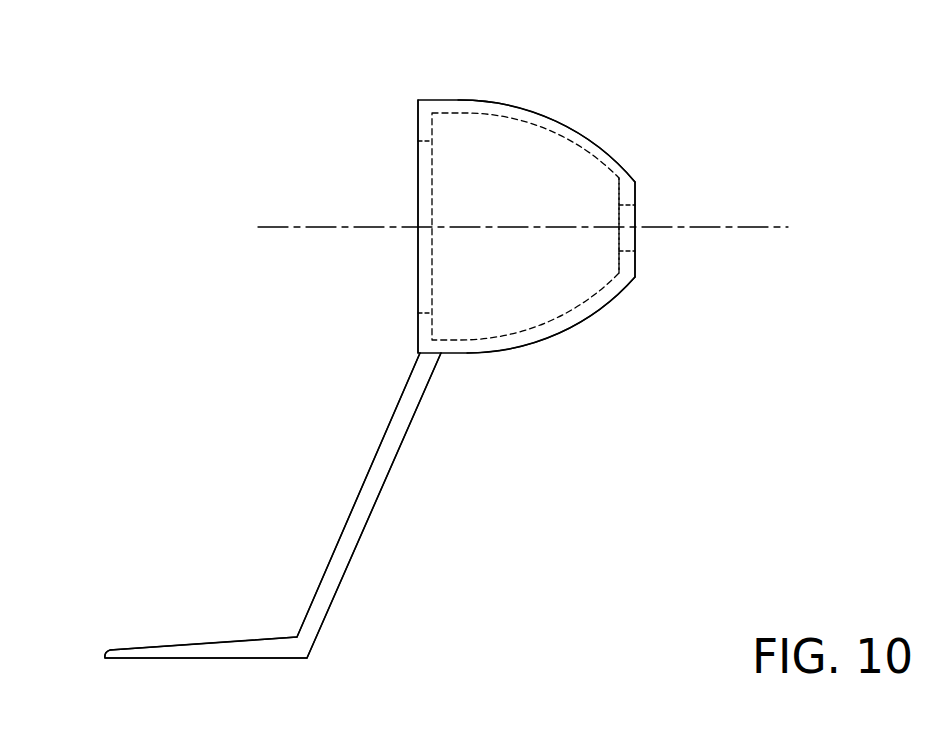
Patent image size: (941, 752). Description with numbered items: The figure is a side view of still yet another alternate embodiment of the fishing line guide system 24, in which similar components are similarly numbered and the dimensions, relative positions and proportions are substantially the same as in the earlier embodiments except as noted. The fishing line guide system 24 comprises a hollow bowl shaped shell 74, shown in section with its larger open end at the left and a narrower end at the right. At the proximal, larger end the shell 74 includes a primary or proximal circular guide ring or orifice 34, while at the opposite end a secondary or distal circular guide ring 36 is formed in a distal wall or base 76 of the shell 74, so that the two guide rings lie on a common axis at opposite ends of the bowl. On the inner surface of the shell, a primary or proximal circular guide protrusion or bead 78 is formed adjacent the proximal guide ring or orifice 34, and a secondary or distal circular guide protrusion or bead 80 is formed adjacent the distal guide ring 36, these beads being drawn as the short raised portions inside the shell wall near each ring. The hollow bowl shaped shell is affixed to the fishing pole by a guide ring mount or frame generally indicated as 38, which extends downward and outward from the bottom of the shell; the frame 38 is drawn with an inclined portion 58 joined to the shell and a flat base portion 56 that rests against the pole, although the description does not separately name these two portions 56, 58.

The fishing line guide system 24 is at (240, 147).
The primary or proximal circular guide ring or orifice 34 is at (410, 165).
The secondary or distal circular guide ring 36 is at (635, 225).
The guide ring mount or frame 38 is at (430, 577).
The base portion 56 is at (335, 553).
The arm portion 58 is at (408, 392).
The hollow bowl shaped shell 74 is at (562, 333).
The distal wall or base 76 is at (637, 260).
The primary or proximal circular guide protrusion or bead 78 is at (418, 137).
The secondary or distal circular guide protrusion or bead 80 is at (636, 199).